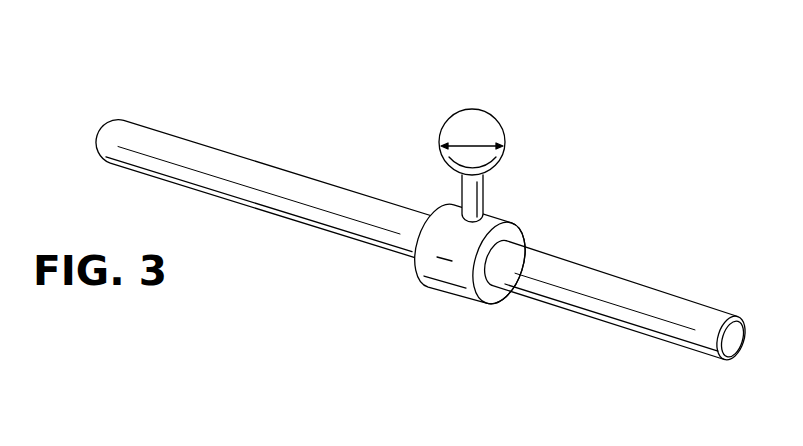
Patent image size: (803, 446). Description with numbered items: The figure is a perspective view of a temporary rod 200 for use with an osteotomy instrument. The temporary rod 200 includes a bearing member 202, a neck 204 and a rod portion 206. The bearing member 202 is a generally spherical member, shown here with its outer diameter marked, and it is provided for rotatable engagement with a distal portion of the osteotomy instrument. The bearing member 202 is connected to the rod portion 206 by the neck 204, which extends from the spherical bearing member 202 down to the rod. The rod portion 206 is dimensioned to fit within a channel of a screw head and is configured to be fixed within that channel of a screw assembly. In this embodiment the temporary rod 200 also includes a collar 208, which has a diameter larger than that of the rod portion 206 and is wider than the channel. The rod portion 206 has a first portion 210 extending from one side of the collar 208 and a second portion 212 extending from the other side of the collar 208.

The temporary rod 200 is at (424, 227).
The bearing member 202 is at (504, 135).
The neck 204 is at (485, 196).
The rod portion 206 is at (424, 259).
The collar 208 is at (518, 228).
The first portion 210 is at (317, 228).
The second portion 212 is at (682, 348).